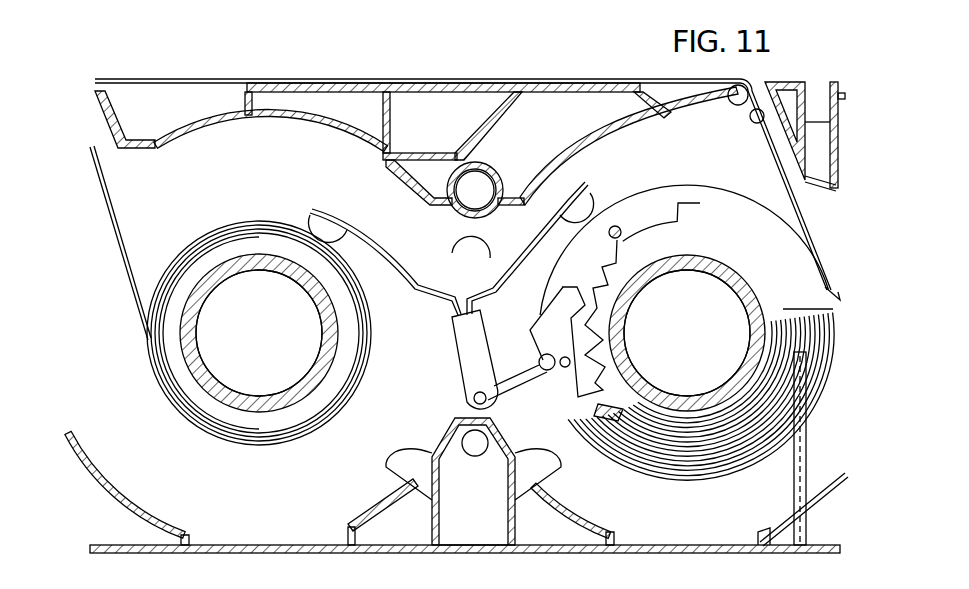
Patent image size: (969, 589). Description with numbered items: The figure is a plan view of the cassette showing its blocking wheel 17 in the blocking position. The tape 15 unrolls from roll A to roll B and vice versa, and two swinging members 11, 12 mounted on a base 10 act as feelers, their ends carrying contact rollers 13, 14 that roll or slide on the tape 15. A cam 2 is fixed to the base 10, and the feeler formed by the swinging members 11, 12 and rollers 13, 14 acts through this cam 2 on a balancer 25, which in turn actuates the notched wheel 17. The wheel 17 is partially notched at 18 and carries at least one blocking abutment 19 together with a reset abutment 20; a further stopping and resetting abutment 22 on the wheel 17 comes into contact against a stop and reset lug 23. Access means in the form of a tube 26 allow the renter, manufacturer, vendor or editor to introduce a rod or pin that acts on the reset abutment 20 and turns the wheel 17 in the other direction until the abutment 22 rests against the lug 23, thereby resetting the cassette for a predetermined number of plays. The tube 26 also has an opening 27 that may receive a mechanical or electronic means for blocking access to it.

The tape 15 is at (297, 79).
The roller or contacter 14 is at (327, 230).
The swinging member 11 is at (388, 255).
The swinging member 12 is at (509, 266).
The roller or contacter 13 is at (582, 200).
The stop and reset lug 23 is at (620, 228).
The stopping and resetting abutment 22 is at (692, 225).
The reset abutment 20 is at (840, 292).
The base 10 is at (460, 352).
The cam 2 is at (523, 377).
The notched portion 18 is at (597, 373).
The wheel 17 is at (650, 413).
The balancer 25 is at (557, 400).
The blocking abutment 19 is at (623, 430).
The roll A is at (683, 397).
The roll B is at (263, 407).
The access means 26 is at (800, 498).
The opening 27 is at (793, 533).